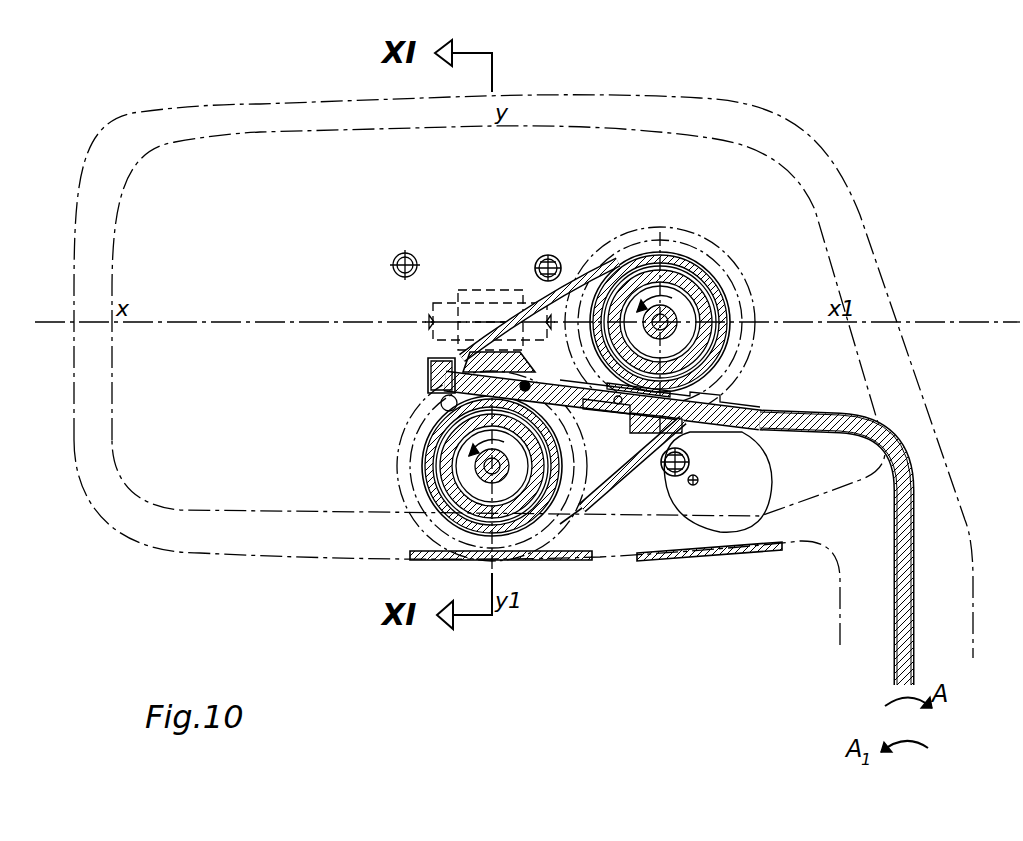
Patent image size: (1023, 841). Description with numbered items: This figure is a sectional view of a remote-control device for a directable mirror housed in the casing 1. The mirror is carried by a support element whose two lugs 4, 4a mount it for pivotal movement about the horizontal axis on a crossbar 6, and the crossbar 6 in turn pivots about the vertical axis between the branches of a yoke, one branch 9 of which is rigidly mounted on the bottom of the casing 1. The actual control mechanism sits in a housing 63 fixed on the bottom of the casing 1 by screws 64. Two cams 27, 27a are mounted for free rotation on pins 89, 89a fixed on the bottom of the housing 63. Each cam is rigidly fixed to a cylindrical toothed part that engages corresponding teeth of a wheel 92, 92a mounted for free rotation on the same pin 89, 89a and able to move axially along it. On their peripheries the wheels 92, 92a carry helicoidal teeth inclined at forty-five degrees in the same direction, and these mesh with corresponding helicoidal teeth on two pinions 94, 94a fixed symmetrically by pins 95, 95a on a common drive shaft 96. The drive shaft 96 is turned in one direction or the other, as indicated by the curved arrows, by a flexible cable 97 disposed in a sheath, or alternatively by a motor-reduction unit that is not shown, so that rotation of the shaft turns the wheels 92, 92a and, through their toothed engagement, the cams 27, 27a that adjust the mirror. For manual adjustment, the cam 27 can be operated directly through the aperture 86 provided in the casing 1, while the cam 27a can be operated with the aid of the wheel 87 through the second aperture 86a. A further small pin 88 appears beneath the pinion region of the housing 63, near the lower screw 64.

The casing 1 is at (576, 104).
The lug 4 is at (538, 338).
The lug 4a is at (426, 312).
The crossbar 6 is at (468, 313).
The yoke branch 9 is at (515, 292).
The cam 27 is at (404, 446).
The cam 27a is at (688, 242).
The housing 63 is at (626, 470).
The screw 64 is at (552, 258).
The aperture 86 is at (520, 562).
The aperture 86a is at (736, 556).
The wheel 87 is at (762, 519).
The pin 88 is at (700, 490).
The pin 89 is at (490, 467).
The pin 89a is at (669, 315).
The wheel 92 is at (452, 437).
The wheel 92a is at (650, 278).
The pinion 94 is at (446, 399).
The pinion 94a is at (758, 380).
The pin 95 is at (521, 384).
The pin 95a is at (619, 405).
The drive shaft 96 is at (584, 410).
The flexible cable 97 is at (856, 428).